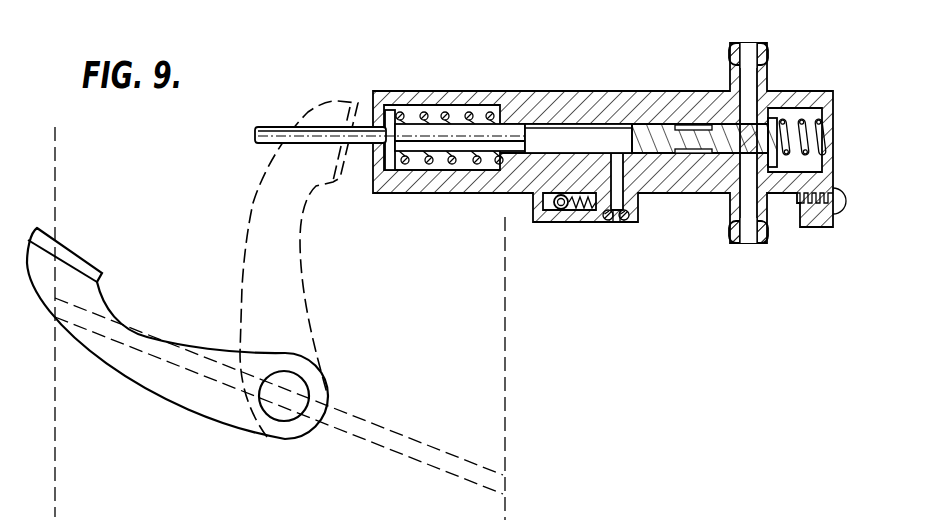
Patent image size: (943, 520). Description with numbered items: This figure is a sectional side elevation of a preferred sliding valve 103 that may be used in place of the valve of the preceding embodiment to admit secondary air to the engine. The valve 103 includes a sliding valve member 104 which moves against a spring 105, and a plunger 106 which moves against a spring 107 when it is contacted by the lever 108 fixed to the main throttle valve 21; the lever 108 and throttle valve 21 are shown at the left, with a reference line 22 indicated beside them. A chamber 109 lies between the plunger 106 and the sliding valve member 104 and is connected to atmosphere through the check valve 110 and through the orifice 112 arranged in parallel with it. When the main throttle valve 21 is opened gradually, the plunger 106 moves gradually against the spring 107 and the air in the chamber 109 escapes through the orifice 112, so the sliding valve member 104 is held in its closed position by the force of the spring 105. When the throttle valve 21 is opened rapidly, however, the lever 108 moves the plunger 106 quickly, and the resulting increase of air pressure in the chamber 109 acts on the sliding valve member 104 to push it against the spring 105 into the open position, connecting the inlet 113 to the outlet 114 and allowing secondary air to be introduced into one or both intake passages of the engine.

The main throttle valve 21 is at (417, 457).
The reference line 22 is at (507, 383).
The sliding valve 103 is at (592, 86).
The sliding valve member 104 is at (665, 130).
The spring 105 is at (800, 110).
The plunger 106 is at (500, 135).
The spring 107 is at (445, 113).
The lever 108 is at (86, 258).
The chamber 109 is at (552, 138).
The check valve 110 is at (567, 222).
The orifice 112 is at (616, 222).
The inlet 113 is at (750, 58).
The outlet 114 is at (747, 235).